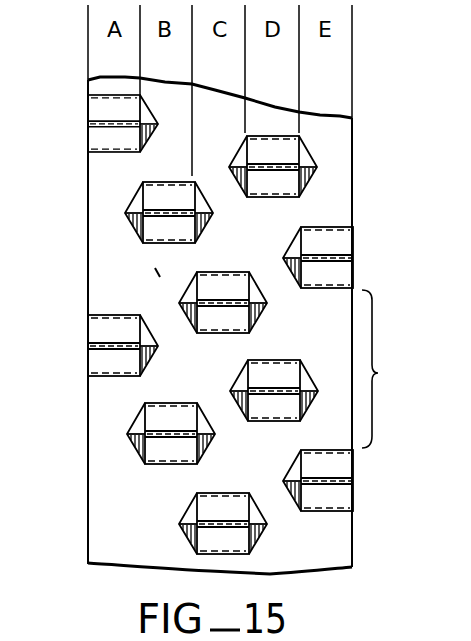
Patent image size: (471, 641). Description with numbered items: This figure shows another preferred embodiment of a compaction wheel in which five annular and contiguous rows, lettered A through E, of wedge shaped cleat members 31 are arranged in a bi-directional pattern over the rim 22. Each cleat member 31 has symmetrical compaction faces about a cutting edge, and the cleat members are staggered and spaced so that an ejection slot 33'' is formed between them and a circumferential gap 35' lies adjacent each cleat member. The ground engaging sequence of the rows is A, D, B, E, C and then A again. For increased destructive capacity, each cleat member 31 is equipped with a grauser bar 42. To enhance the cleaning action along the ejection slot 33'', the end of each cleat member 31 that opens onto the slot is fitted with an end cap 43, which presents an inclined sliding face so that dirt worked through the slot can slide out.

The rim 22 is at (90, 220).
The cleat member 31 is at (100, 137).
The ejection slot 33'' is at (103, 285).
The grauser bar 42 is at (105, 342).
The end cap 43 is at (212, 423).
The circumferential gap 35' is at (389, 369).